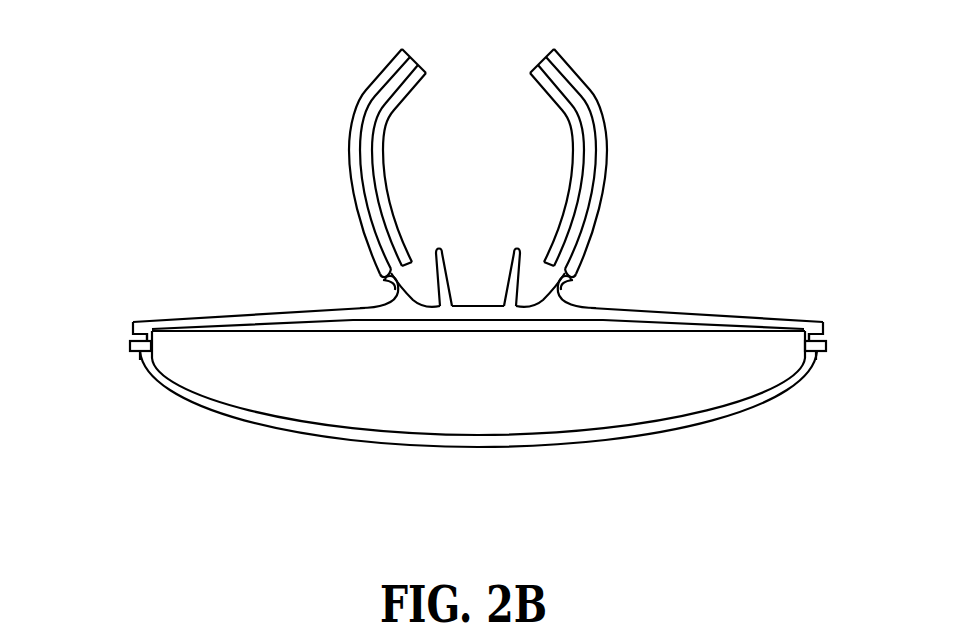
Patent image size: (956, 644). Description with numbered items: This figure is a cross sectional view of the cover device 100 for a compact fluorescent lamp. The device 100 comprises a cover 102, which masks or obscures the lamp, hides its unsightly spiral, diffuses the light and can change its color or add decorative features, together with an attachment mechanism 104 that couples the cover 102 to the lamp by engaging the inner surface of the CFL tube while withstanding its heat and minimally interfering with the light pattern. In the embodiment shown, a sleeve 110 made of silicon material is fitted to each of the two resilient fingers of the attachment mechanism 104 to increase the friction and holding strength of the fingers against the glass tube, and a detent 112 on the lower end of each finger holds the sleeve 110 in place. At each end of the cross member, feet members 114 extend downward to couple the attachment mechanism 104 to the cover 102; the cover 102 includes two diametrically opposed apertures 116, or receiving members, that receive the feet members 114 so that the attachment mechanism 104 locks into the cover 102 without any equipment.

The cover device 100 is at (706, 139).
The cover 102 is at (678, 433).
The attachment mechanism 104 is at (660, 316).
The sleeve 110 is at (371, 85).
The detent 112 is at (385, 280).
The feet members 114 is at (131, 322).
The apertures 116 is at (131, 362).